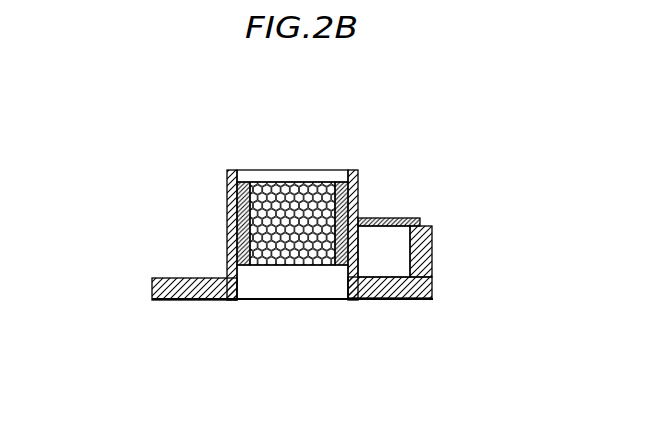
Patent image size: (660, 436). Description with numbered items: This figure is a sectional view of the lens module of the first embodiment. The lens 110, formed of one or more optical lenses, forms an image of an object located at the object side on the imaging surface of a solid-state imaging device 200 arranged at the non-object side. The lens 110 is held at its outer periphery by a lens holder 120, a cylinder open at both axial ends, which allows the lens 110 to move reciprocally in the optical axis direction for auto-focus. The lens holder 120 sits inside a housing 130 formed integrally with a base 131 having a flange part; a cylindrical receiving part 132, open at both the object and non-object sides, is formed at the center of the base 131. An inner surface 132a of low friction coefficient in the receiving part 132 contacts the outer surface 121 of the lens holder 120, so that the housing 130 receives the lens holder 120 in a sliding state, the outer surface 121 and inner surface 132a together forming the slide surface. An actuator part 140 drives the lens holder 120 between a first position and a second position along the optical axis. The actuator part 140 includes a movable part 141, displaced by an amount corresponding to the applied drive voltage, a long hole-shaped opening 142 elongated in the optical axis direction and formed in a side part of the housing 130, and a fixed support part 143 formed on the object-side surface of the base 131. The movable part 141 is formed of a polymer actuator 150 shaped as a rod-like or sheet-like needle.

The lens 110 is at (298, 268).
The lens holder 120 is at (237, 166).
The outer surface of the lens holder 121 is at (360, 218).
The housing 130 is at (284, 187).
The base 131 is at (434, 288).
The cylindrical receiving part 132 is at (240, 171).
The inner surface 132a is at (342, 170).
The actuator part 140 is at (486, 218).
The movable part 141 is at (392, 213).
The long hole-shaped opening 142 is at (362, 246).
The fixed support part 143 is at (433, 260).
The polymer actuator 150 is at (441, 192).
The solid-state imaging device 200 is at (360, 301).